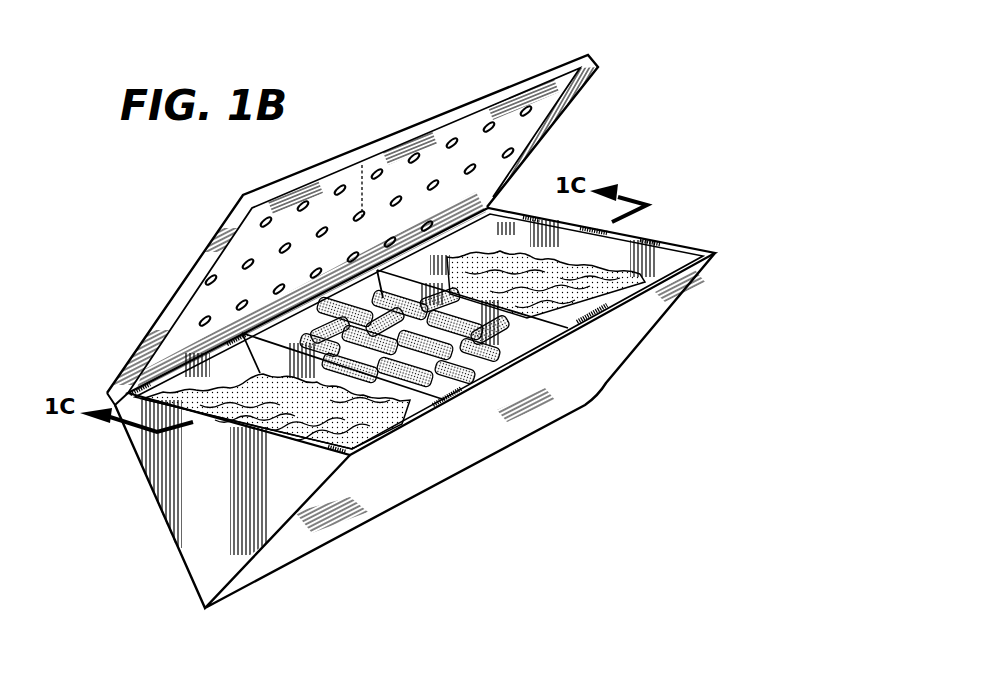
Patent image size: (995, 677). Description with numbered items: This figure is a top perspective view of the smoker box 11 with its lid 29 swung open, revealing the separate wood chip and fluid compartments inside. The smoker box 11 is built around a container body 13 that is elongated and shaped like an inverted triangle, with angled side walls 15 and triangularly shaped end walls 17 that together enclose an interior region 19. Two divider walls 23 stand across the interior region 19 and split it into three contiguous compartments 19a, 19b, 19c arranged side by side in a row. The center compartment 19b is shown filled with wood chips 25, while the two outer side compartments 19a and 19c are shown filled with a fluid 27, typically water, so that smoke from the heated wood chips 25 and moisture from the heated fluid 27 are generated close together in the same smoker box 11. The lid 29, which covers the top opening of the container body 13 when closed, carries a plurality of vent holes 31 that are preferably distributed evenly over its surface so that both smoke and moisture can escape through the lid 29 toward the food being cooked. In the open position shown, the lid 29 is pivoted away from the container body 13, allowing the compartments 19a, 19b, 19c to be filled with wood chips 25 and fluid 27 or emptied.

The smoker box 11 is at (667, 192).
The container body 13 is at (647, 312).
The angled side walls 15 is at (407, 477).
The triangularly shaped end walls 17 is at (200, 535).
The interior region 19 is at (660, 257).
The side compartment 19a is at (160, 387).
The center compartment 19b is at (538, 365).
The side compartment 19c is at (516, 232).
The divider walls 23 is at (540, 325).
The wood chips 25 is at (483, 340).
The fluid 27 is at (620, 282).
The lid 29 is at (567, 70).
The vent holes 31 is at (405, 190).